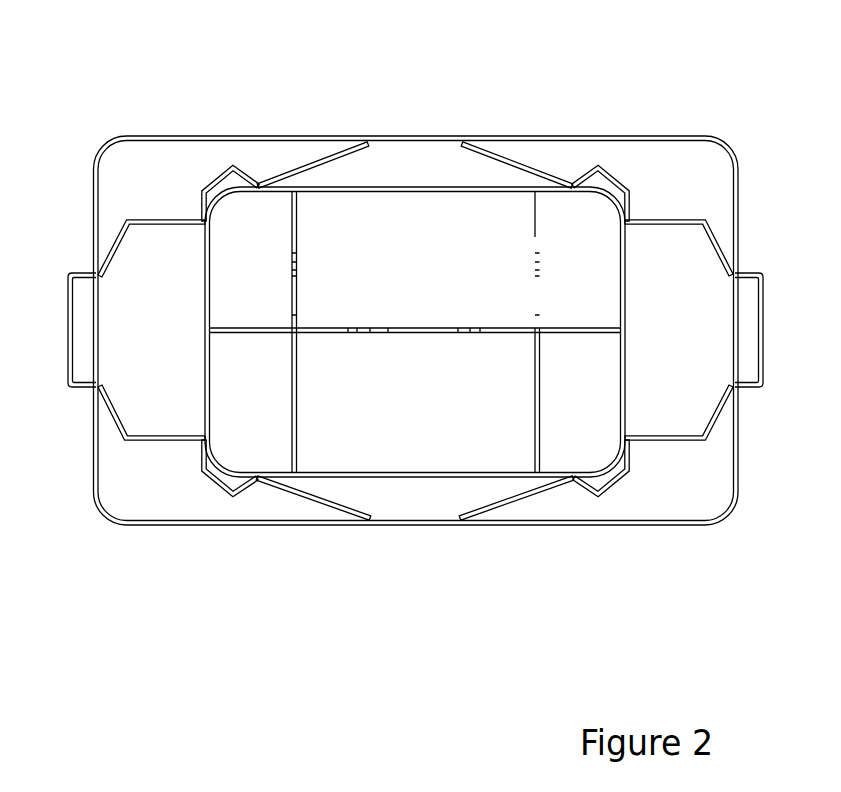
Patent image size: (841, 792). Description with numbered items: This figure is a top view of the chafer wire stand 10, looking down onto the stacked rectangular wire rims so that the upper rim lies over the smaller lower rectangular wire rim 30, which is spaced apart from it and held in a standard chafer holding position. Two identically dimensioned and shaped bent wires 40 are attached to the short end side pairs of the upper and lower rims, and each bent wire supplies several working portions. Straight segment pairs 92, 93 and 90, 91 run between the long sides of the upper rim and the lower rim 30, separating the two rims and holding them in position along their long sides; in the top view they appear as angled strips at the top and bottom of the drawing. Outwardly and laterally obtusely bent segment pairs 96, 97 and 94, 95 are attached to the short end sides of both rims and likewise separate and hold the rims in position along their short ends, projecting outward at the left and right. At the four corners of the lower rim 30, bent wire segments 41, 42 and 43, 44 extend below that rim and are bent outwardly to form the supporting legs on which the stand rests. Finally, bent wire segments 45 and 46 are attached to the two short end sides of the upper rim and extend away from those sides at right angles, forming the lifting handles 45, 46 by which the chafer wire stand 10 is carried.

The chafer wire stand 10 is at (748, 100).
The lower rectangular wire rim 30 is at (393, 473).
The bent wire 40 is at (151, 216).
The bent wire segment 41 is at (212, 183).
The bent wire segment 42 is at (215, 482).
The bent wire segment 43 is at (620, 481).
The bent wire segment 44 is at (612, 178).
The lifting handle 45 is at (68, 327).
The lifting handle 46 is at (762, 328).
The straight wire segment 90 is at (517, 498).
The straight wire segment 91 is at (510, 160).
The straight wire segment 92 is at (317, 160).
The straight wire segment 93 is at (308, 498).
The obtusely bent wire segment 94 is at (677, 442).
The obtusely bent wire segment 95 is at (679, 248).
The obtusely bent wire segment 96 is at (139, 224).
The obtusely bent wire segment 97 is at (143, 437).